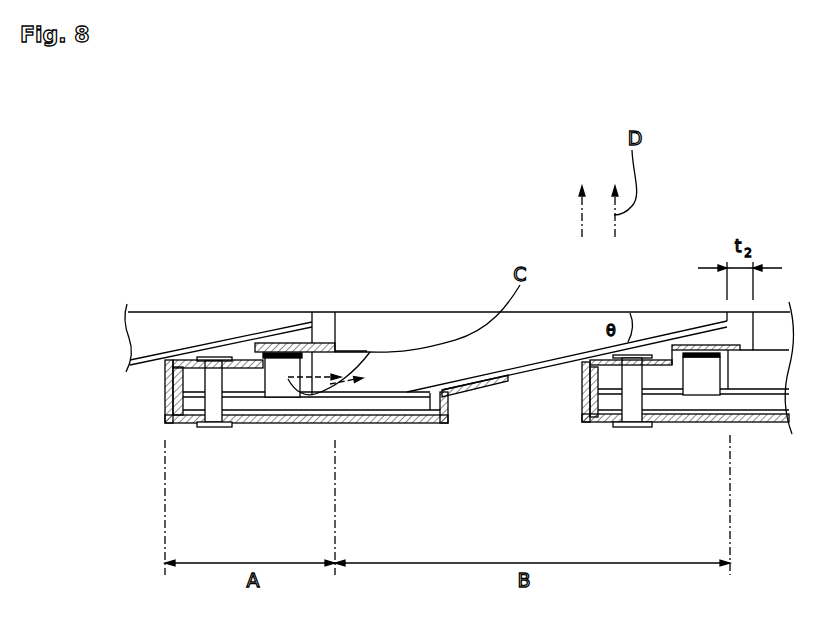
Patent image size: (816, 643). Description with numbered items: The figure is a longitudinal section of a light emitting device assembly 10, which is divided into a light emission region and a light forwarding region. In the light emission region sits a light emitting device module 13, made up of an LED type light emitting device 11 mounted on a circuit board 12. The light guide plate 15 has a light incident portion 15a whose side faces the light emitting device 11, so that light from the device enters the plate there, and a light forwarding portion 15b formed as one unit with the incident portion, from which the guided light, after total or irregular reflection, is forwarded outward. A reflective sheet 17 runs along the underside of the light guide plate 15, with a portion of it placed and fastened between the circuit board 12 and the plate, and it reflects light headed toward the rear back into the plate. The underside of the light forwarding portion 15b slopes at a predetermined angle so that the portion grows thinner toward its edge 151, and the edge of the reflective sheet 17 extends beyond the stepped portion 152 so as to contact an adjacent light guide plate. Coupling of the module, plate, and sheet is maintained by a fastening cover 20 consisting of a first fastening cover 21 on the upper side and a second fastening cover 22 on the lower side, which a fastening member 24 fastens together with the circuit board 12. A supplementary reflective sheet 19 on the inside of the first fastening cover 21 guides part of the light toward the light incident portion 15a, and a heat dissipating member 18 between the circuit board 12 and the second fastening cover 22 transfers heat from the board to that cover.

The light emitting device assembly 10 is at (667, 255).
The light emitting device 11 is at (275, 383).
The circuit board 12 is at (318, 402).
The light emitting device module 13 is at (486, 444).
The light guide plate 15 is at (463, 269).
The edge 151 is at (316, 342).
The stepped portion 152 is at (320, 362).
The light incident portion 15a is at (326, 343).
The light forwarding portion 15b is at (391, 275).
The reflective sheet 17 is at (544, 362).
The heat dissipating member 18 is at (383, 416).
The supplementary reflective sheet 19 is at (270, 343).
The fastening cover 20 is at (414, 425).
The first fastening cover 21 is at (168, 395).
The second fastening cover 22 is at (178, 410).
The fastening member 24 is at (212, 428).